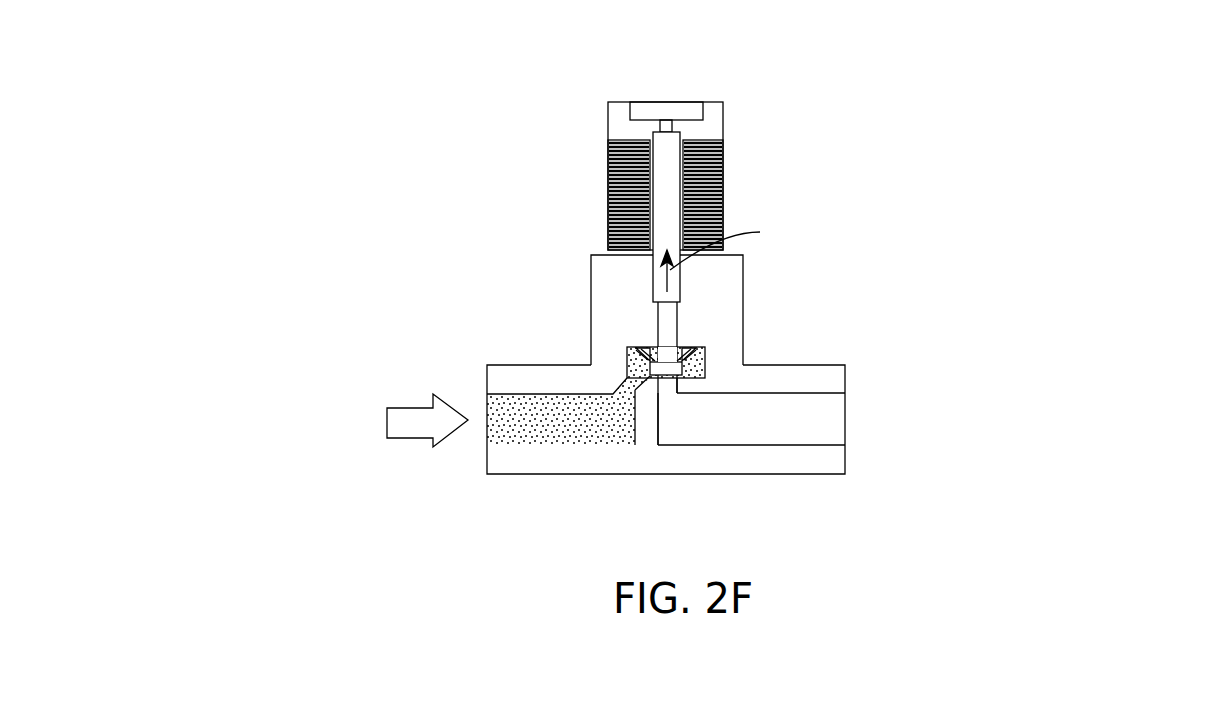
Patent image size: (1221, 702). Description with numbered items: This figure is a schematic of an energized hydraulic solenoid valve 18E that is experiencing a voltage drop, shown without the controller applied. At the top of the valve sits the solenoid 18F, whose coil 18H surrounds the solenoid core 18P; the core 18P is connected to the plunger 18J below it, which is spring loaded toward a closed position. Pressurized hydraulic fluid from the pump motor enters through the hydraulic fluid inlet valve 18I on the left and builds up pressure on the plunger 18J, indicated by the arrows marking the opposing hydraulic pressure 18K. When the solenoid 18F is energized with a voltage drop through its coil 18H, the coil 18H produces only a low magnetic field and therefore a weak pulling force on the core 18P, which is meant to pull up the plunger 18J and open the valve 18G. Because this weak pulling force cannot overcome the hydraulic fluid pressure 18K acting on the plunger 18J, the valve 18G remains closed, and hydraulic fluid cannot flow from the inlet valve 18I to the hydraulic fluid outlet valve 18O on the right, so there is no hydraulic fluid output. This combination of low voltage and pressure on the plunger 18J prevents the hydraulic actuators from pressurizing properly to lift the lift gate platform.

The hydraulic solenoid valve 18E is at (872, 61).
The solenoid 18F is at (713, 102).
The coil 18H is at (712, 203).
The solenoid core 18P is at (667, 175).
The plunger 18J is at (686, 368).
The hydraulic pressure 18K is at (657, 356).
The hydraulic fluid inlet valve 18I is at (487, 429).
The hydraulic fluid outlet valve 18O is at (845, 404).
The valve 18G is at (677, 395).